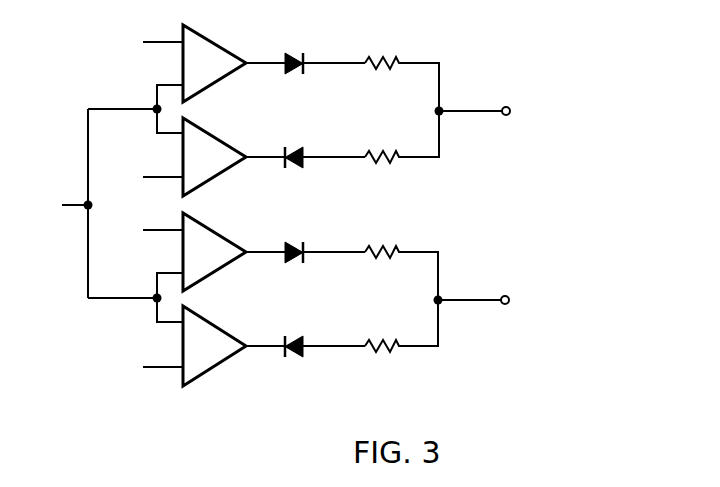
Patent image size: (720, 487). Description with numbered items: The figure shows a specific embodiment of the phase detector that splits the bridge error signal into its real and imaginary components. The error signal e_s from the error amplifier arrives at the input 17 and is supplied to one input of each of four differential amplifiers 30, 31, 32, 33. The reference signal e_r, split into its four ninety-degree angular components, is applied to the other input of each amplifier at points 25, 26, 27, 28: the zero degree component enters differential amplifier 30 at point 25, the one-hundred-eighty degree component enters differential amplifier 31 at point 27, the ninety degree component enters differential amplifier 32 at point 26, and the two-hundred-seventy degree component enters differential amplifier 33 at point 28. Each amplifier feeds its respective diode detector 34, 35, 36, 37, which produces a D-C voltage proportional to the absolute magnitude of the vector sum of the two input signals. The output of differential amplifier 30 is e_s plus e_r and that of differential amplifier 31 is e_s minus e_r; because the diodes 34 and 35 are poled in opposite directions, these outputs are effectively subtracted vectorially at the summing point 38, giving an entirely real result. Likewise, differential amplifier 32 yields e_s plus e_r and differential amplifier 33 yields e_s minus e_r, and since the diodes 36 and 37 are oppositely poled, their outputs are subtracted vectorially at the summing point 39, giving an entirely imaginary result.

The input 17 is at (107, 203).
The point 25 is at (150, 37).
The point 26 is at (144, 229).
The point 27 is at (144, 170).
The point 28 is at (130, 367).
The differential amplifier 30 is at (214, 59).
The differential amplifier 31 is at (214, 153).
The differential amplifier 32 is at (214, 248).
The differential amplifier 33 is at (214, 342).
The diode detector 34 is at (305, 75).
The diode detector 35 is at (305, 143).
The diode detector 36 is at (305, 264).
The diode detector 37 is at (305, 332).
The summing point 38 is at (519, 97).
The summing point 39 is at (515, 287).